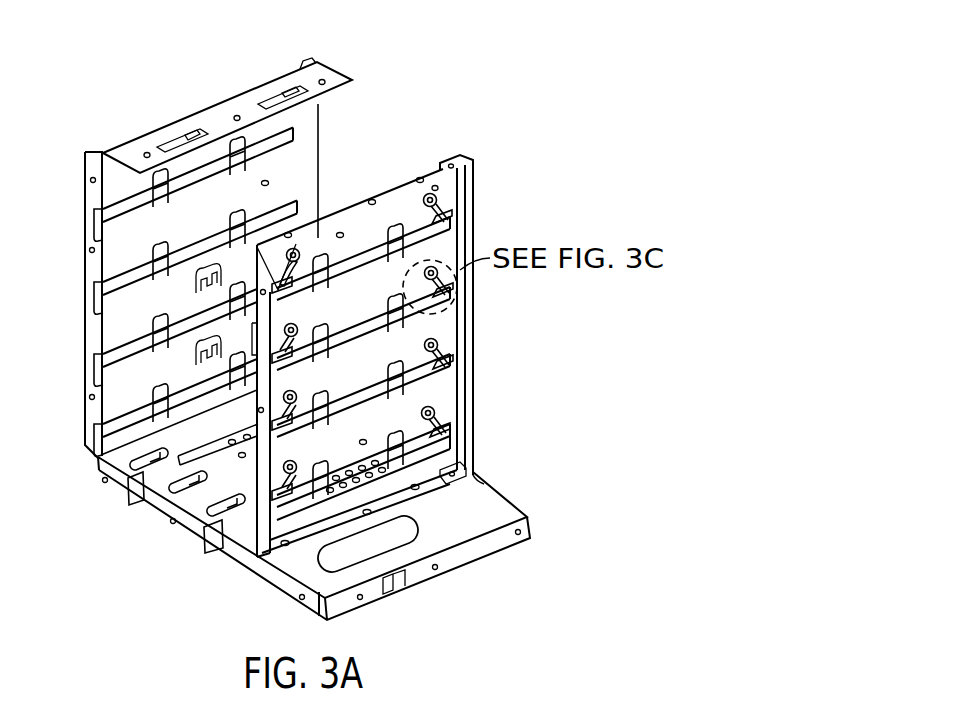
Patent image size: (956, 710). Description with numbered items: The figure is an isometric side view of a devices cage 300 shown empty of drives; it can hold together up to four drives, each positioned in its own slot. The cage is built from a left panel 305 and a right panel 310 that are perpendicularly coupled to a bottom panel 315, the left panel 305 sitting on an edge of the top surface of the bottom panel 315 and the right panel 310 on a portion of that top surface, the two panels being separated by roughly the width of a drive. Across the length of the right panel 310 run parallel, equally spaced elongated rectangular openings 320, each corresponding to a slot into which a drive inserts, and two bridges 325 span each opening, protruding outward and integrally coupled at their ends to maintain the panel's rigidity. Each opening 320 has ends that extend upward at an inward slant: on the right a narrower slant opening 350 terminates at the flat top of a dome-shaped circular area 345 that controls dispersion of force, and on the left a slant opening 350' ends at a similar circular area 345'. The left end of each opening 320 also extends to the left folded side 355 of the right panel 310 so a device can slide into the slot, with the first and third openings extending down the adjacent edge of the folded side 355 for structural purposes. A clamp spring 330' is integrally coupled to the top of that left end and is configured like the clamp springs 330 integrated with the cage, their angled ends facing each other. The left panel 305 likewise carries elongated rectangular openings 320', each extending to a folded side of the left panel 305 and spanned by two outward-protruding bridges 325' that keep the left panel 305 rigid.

The devices cage 300 is at (106, 81).
The left panel 305 is at (327, 74).
The right panel 310 is at (462, 162).
The bottom panel 315 is at (193, 505).
The elongated rectangular opening 320 is at (363, 335).
The elongated rectangular opening 320' is at (195, 270).
The bridge 325 is at (373, 313).
The bridge 325' is at (199, 241).
The clamp spring 330 is at (474, 317).
The clamp spring 330' is at (316, 388).
The circular area 345 is at (451, 156).
The circular area 345' is at (322, 217).
The slant opening 350 is at (471, 294).
The slant opening 350' is at (261, 335).
The folded side 355 is at (258, 557).